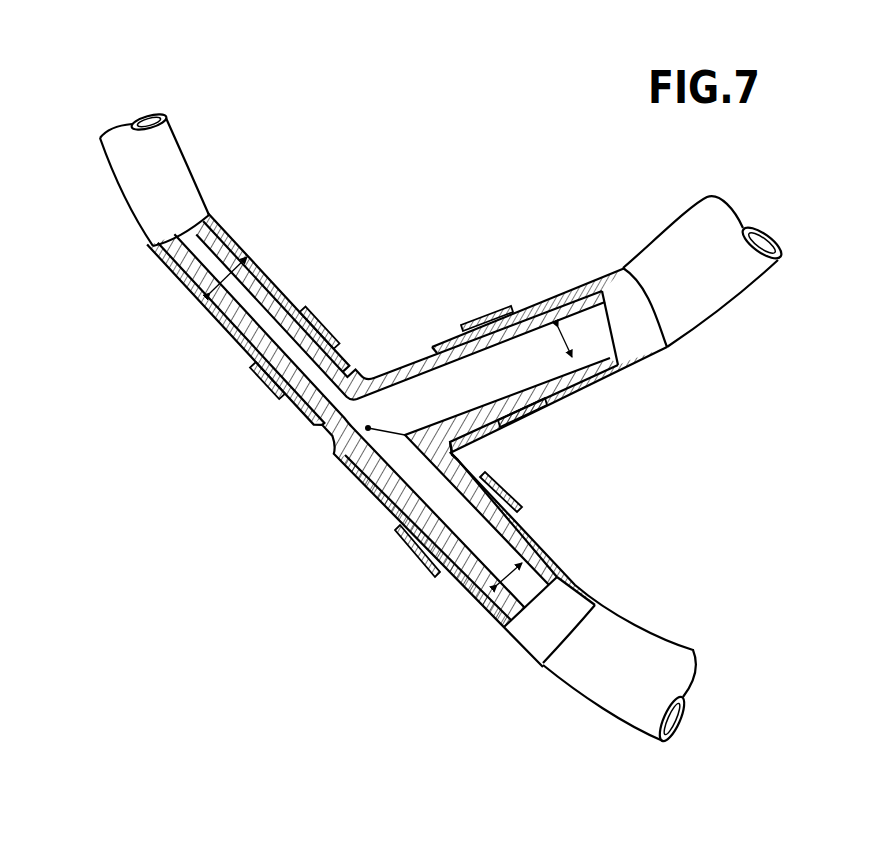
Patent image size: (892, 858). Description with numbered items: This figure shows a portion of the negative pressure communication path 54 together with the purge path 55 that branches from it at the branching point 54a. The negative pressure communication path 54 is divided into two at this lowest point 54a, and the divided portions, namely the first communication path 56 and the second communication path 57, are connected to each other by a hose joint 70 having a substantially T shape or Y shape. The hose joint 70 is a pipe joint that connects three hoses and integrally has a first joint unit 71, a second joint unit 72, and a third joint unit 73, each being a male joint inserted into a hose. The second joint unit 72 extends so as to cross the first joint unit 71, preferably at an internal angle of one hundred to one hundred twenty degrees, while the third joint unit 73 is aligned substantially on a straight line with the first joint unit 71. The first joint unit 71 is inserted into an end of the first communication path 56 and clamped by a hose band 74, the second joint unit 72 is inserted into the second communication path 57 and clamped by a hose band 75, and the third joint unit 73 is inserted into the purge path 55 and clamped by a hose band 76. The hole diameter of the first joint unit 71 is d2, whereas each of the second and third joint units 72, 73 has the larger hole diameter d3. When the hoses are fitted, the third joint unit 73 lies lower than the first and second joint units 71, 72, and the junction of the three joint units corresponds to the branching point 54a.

The negative pressure communication path 54 is at (498, 80).
The branching point 54a is at (368, 428).
The purge path 55 is at (630, 633).
The first communication path 56 is at (197, 186).
The second communication path 57 is at (663, 237).
The hose joint 70 is at (316, 427).
The first joint unit 71 is at (345, 352).
The second joint unit 72 is at (439, 350).
The third joint unit 73 is at (490, 487).
The hose band 74 is at (314, 312).
The hose band 75 is at (487, 318).
The hose band 76 is at (515, 500).
The hole diameter of the first joint unit d2 is at (228, 276).
The hole diameter of the second and third joint units d3 is at (564, 338).